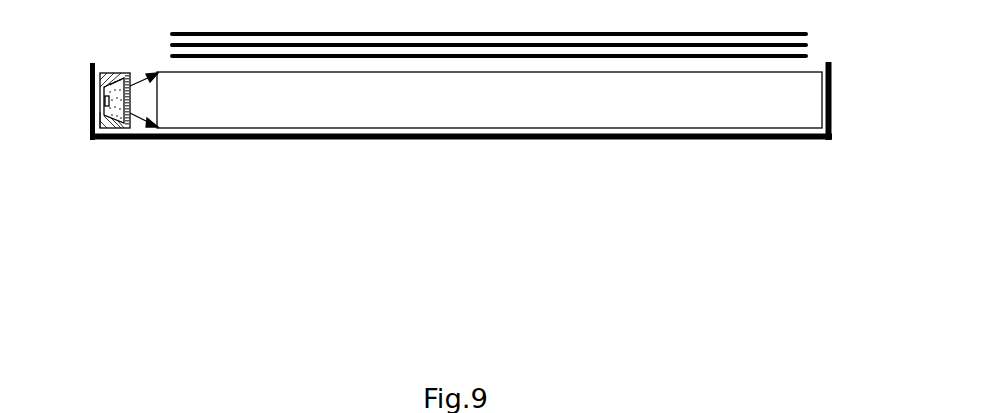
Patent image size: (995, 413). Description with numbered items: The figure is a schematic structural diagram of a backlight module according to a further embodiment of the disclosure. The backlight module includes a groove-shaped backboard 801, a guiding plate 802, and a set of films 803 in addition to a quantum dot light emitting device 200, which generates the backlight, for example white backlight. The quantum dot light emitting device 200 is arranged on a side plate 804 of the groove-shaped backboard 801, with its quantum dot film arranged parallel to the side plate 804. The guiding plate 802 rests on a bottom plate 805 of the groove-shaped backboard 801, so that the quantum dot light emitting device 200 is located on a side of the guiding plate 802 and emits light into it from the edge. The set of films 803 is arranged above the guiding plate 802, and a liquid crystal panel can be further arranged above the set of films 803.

The quantum dot light emitting device 200 is at (113, 73).
The groove-shaped backboard 801 is at (412, 206).
The guiding plate 802 is at (805, 78).
The set of films 803 is at (154, 19).
The side plate 804 is at (91, 128).
The bottom plate 805 is at (432, 141).